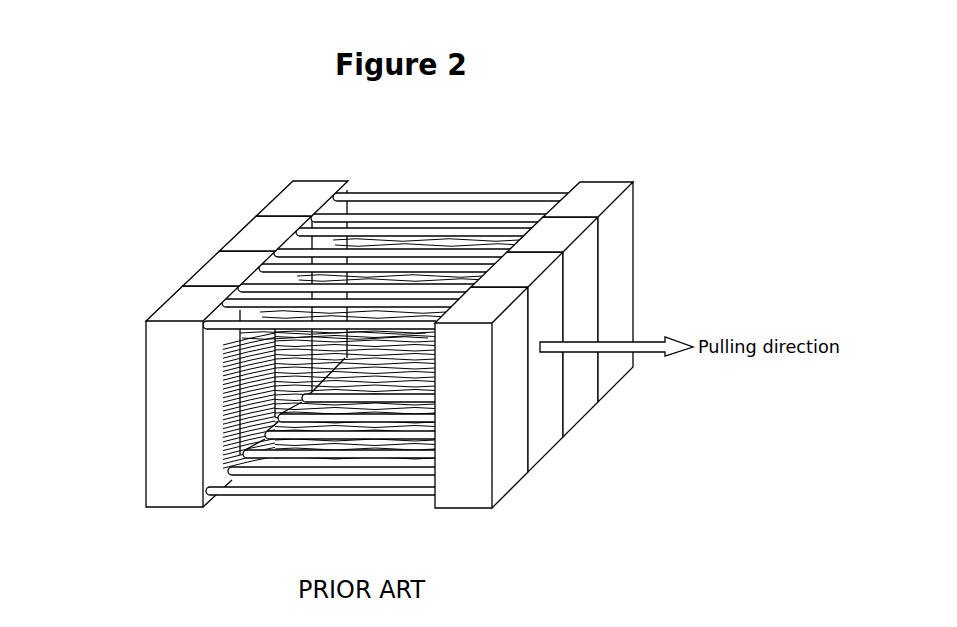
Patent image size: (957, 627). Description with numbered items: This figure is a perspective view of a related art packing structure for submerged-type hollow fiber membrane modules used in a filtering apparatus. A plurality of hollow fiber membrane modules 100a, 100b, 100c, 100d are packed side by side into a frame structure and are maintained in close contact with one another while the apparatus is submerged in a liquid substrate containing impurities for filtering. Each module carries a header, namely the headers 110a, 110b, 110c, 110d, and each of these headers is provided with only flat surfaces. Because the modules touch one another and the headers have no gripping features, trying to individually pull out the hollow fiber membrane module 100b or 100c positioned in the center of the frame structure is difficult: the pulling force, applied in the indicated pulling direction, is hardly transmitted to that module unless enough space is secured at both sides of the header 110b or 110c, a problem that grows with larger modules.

The hollow fiber membrane module 100a is at (150, 296).
The hollow fiber membrane module 100b is at (187, 261).
The hollow fiber membrane module 100c is at (222, 226).
The hollow fiber membrane module 100d is at (255, 191).
The header 110a is at (510, 325).
The header 110b is at (548, 290).
The header 110c is at (578, 256).
The header 110d is at (620, 203).